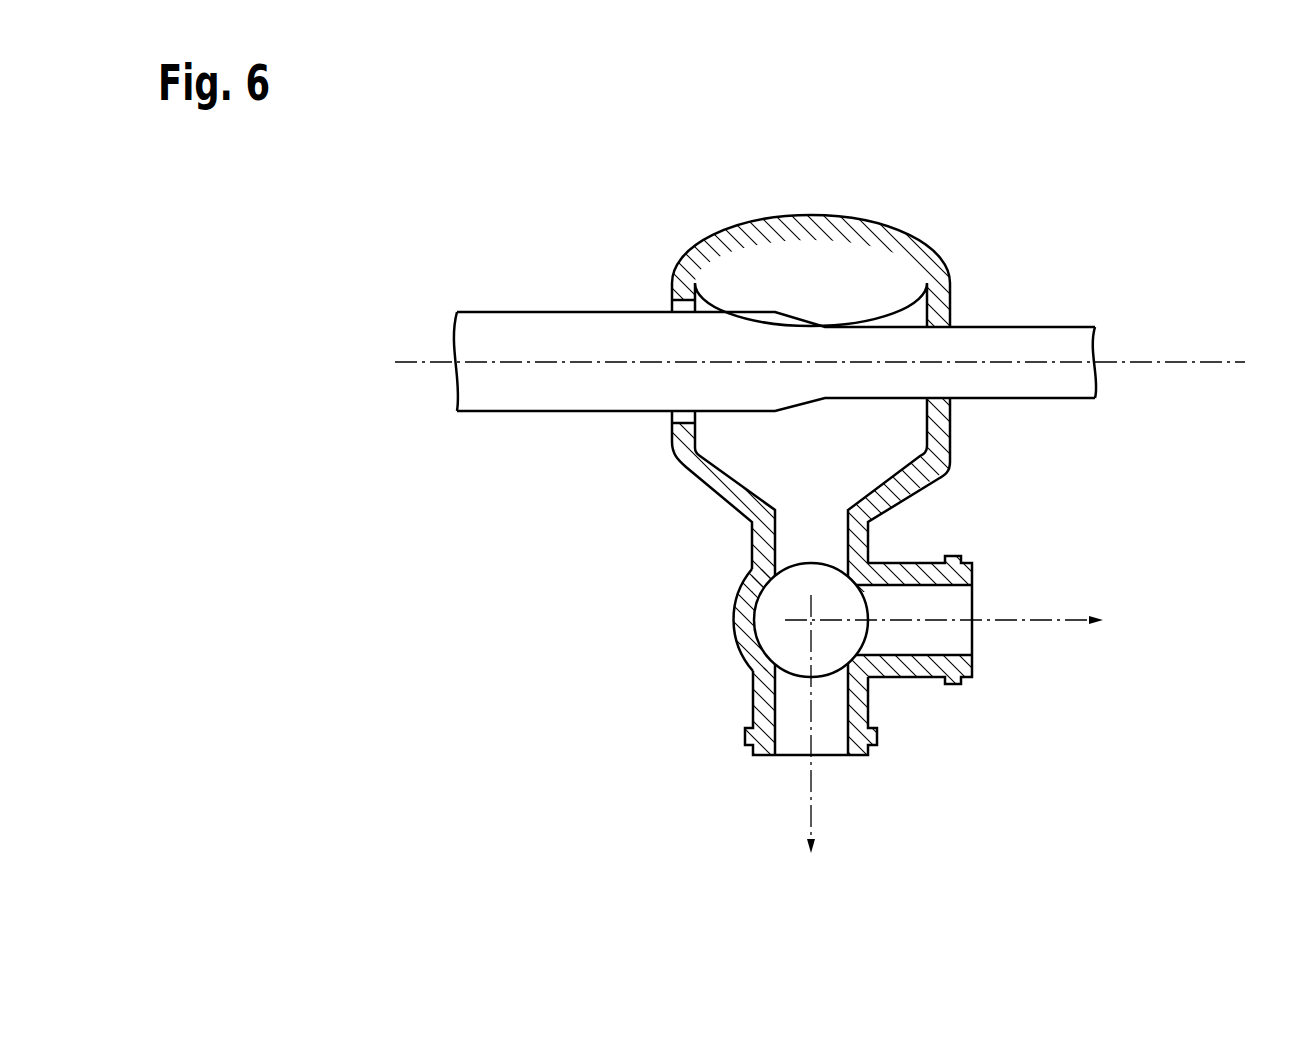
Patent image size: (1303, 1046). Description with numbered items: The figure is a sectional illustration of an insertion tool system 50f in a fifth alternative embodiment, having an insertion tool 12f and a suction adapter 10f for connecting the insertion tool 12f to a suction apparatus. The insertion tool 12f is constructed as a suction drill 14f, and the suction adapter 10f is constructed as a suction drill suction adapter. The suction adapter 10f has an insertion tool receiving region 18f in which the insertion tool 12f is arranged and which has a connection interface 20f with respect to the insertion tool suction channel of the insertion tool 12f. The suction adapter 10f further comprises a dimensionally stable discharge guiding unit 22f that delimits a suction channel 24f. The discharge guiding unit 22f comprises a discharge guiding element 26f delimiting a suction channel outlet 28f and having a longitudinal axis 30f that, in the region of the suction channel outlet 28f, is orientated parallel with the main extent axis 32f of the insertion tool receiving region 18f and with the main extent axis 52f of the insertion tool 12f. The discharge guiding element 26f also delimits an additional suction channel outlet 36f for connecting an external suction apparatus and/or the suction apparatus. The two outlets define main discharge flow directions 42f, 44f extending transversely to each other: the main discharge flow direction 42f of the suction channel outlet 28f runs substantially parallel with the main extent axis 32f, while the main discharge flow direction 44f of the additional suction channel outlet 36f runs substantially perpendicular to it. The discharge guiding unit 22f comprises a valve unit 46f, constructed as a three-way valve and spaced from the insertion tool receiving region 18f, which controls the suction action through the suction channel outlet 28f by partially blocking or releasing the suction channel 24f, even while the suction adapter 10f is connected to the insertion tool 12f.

The suction adapter 10f is at (580, 533).
The insertion tool 12f is at (775, 315).
The suction drill 14f is at (530, 325).
The insertion tool receiving region 18f is at (811, 242).
The connection interface 20f is at (776, 259).
The discharge guiding unit 22f is at (694, 616).
The suction channel 24f is at (806, 545).
The discharge guiding element 26f is at (935, 437).
The suction channel outlet 28f is at (978, 598).
The longitudinal axis 30f is at (951, 672).
The main extent axis 32f is at (820, 418).
The additional suction channel outlet 36f is at (789, 757).
The main discharge flow direction 42f is at (1072, 623).
The main discharge flow direction 44f is at (812, 792).
The valve unit 46f is at (776, 638).
The insertion tool system 50f is at (523, 650).
The main extent axis 52f is at (1193, 365).